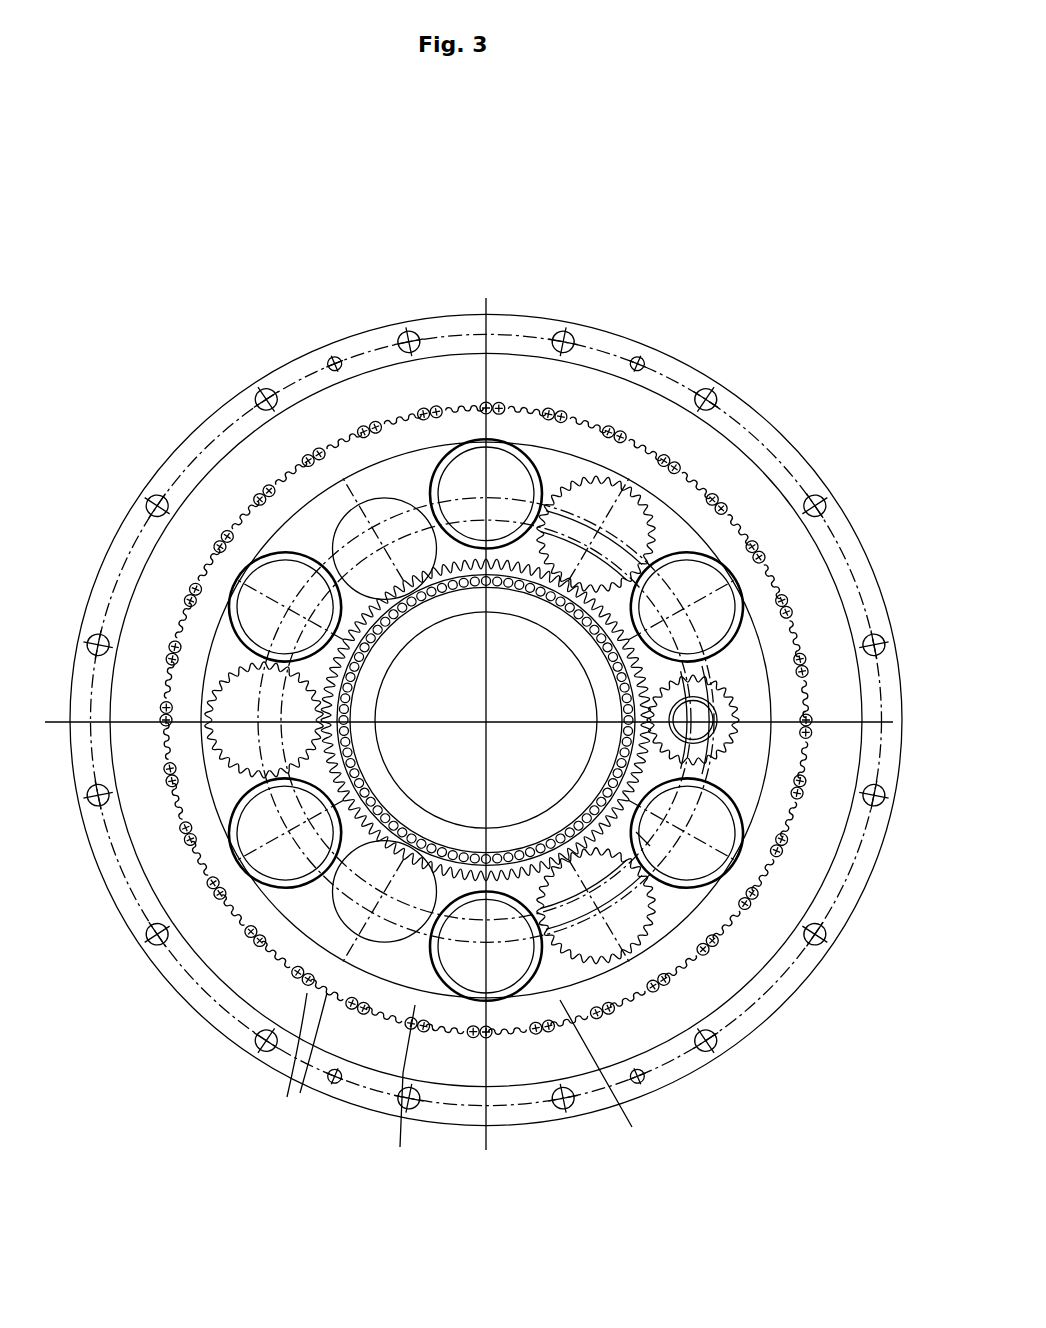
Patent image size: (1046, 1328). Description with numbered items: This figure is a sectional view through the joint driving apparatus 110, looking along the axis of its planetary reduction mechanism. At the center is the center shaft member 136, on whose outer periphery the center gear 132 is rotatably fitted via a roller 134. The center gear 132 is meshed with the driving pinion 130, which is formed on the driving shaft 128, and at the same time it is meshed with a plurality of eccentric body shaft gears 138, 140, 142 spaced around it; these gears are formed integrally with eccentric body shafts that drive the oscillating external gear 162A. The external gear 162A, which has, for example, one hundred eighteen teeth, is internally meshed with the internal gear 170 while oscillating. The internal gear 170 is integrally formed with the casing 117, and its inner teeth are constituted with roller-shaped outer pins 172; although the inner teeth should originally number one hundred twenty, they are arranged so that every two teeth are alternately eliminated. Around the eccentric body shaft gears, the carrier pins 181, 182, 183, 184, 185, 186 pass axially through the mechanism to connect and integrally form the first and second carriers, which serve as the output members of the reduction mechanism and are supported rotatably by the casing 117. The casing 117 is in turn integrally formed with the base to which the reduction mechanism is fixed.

The joint driving apparatus 110 is at (699, 275).
The casing 117 is at (592, 1110).
The driving shaft 128 is at (640, 692).
The driving pinion 130 is at (727, 687).
The center gear 132 is at (642, 838).
The roller 134 is at (610, 786).
The center shaft member 136 is at (600, 740).
The eccentric body shaft gear 138 is at (657, 503).
The eccentric body shaft gear 140 is at (645, 958).
The eccentric body shaft gear 142 is at (233, 738).
The external gear 162A is at (539, 1086).
The internal gear 170 is at (240, 1008).
The outer pin 172 is at (287, 1097).
The carrier pin 181 is at (530, 450).
The carrier pin 182 is at (712, 611).
The carrier pin 183 is at (722, 830).
The carrier pin 184 is at (517, 995).
The carrier pin 185 is at (270, 991).
The carrier pin 186 is at (227, 583).